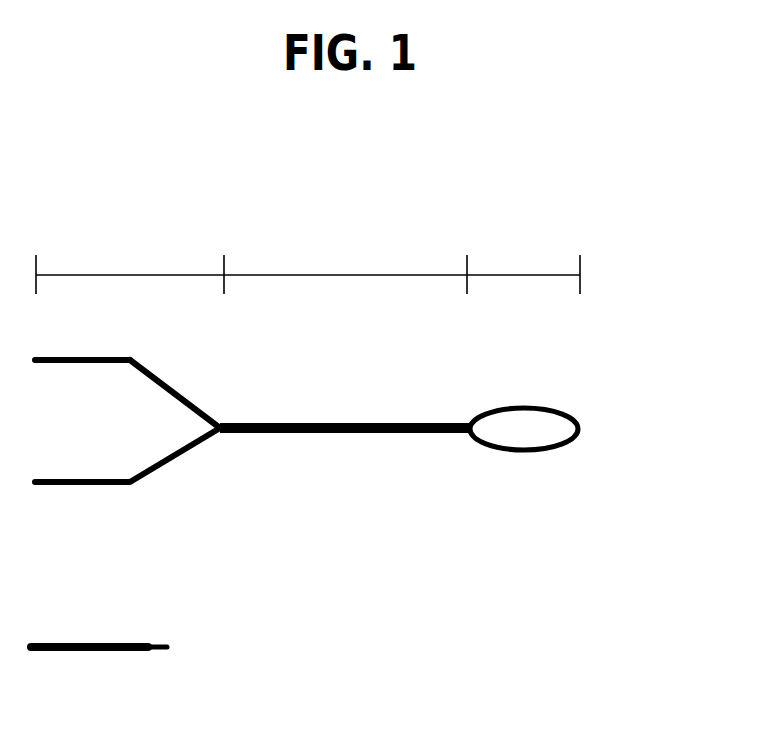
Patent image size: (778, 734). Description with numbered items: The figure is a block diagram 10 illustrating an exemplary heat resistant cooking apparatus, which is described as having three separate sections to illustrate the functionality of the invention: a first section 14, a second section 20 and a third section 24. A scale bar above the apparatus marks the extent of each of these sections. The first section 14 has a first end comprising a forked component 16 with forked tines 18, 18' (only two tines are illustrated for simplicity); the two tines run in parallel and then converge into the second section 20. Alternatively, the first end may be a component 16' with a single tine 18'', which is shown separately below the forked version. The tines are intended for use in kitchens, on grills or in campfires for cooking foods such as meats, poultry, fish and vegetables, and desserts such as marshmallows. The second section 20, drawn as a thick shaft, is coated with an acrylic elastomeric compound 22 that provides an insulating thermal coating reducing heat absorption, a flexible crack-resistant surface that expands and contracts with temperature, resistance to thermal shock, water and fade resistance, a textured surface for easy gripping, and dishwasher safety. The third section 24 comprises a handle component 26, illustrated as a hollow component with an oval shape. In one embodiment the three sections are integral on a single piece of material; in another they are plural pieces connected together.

The block diagram 10 is at (621, 104).
The first section 14 is at (120, 274).
The second section 20 is at (345, 274).
The third section 24 is at (513, 274).
The forked tine 18 is at (105, 336).
The forked component 16 is at (183, 388).
The forked tine 18' is at (127, 489).
The acrylic elastomeric compound 22 is at (350, 422).
The handle component 26 is at (524, 405).
The component with single tine 16' is at (140, 622).
The single tine 18'' is at (89, 680).